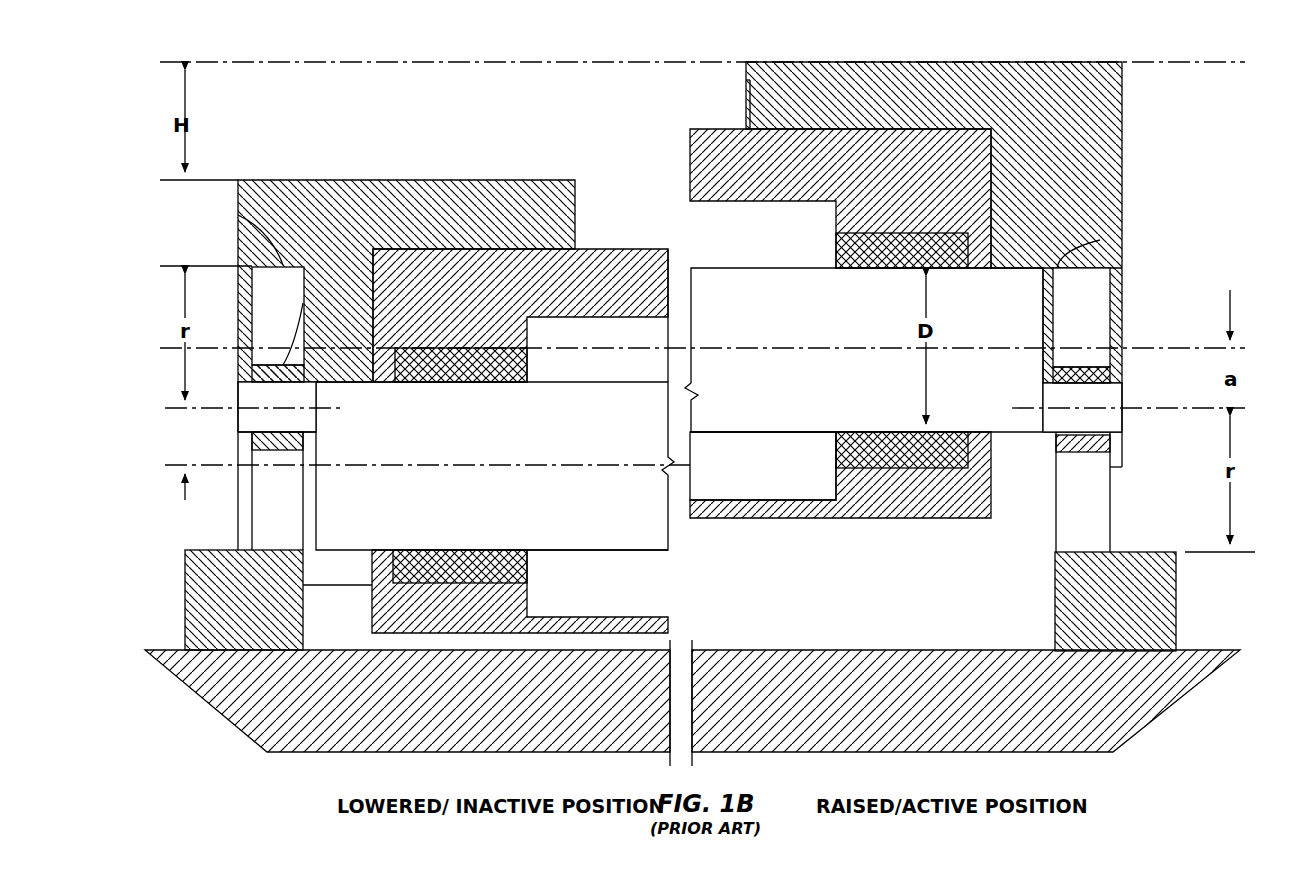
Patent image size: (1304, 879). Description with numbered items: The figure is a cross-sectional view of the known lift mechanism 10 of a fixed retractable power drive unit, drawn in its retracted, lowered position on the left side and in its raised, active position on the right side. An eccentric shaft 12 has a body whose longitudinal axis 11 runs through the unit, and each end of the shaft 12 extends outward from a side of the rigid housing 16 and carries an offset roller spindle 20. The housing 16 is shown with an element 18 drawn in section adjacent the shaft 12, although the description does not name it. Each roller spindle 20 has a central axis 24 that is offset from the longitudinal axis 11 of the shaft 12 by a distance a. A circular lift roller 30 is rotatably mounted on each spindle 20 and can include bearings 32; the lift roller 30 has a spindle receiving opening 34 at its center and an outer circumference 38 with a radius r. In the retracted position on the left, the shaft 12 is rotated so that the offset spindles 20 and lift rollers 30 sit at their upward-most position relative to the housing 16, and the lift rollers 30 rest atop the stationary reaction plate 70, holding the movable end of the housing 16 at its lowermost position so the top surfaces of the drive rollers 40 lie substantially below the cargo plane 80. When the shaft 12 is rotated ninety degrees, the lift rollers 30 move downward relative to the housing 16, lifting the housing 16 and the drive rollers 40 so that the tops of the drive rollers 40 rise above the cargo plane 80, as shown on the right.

The lift mechanism 10 is at (696, 568).
The longitudinal axis 11 is at (172, 466).
The eccentric shaft 12 is at (492, 510).
The housing 16 is at (632, 248).
The bearing 18 is at (393, 602).
The roller spindle 20 is at (242, 396).
The central axis 24 is at (186, 409).
The lift roller 30 is at (252, 508).
The bearing 32 is at (280, 364).
The spindle receiving opening 34 is at (278, 438).
The outer circumference 38 is at (238, 215).
The drive roller 40 is at (433, 180).
The reaction plate 70 is at (185, 600).
The cargo plane 80 is at (535, 62).